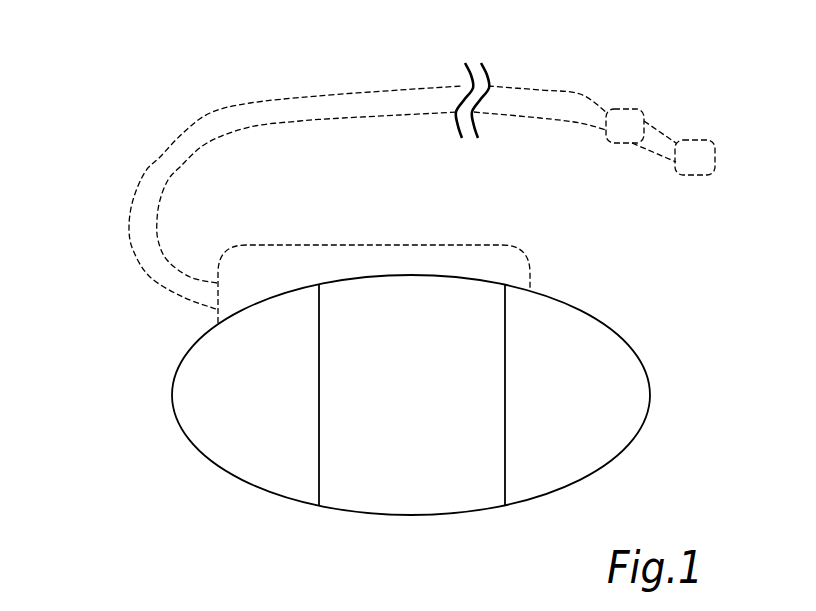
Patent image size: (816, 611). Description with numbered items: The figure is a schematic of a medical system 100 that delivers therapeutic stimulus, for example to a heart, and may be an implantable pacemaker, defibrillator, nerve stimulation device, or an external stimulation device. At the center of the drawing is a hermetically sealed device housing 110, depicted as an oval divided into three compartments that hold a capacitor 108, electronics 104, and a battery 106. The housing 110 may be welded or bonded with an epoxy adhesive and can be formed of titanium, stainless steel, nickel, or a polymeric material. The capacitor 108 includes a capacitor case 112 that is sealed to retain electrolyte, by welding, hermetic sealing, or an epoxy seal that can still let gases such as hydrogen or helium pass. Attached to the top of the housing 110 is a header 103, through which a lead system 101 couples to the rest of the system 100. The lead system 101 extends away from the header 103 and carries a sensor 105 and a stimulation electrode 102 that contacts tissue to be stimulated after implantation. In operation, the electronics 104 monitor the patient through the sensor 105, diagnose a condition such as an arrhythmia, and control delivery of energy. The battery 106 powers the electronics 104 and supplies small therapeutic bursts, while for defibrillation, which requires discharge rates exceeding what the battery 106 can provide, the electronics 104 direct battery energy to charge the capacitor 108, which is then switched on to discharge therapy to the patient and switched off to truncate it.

The medical system 100 is at (133, 38).
The lead system 101 is at (328, 64).
The stimulation electrode 102 is at (712, 141).
The header 103 is at (376, 245).
The electronics 104 is at (413, 517).
The sensor 105 is at (646, 108).
The battery 106 is at (602, 462).
The capacitor 108 is at (220, 458).
The hermetically sealed device housing 110 is at (608, 330).
The capacitor case 112 is at (303, 343).